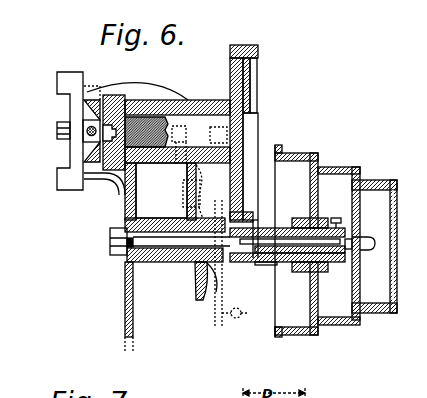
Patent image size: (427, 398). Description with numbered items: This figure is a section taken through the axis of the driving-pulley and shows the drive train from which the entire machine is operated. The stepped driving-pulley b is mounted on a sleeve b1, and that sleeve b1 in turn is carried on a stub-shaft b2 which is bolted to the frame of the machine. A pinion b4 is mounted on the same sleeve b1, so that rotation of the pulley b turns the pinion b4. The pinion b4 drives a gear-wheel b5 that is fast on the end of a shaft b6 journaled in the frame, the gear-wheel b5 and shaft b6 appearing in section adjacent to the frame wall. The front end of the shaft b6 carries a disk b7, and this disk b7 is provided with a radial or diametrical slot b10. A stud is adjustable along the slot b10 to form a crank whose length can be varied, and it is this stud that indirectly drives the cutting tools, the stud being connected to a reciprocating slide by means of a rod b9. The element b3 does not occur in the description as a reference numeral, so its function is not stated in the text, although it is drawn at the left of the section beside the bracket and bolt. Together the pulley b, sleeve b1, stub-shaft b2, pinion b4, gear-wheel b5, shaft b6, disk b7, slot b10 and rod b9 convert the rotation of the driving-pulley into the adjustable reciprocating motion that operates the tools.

The stepped driving-pulley b is at (343, 160).
The sleeve b1 is at (282, 222).
The stub-shaft b2 is at (266, 265).
The bracket b3 is at (85, 86).
The pinion b4 is at (243, 263).
The gear-wheel b5 is at (259, 64).
The shaft b6 is at (232, 118).
The disk b7 is at (108, 96).
The rod b9 is at (88, 136).
The slot b10 is at (133, 112).